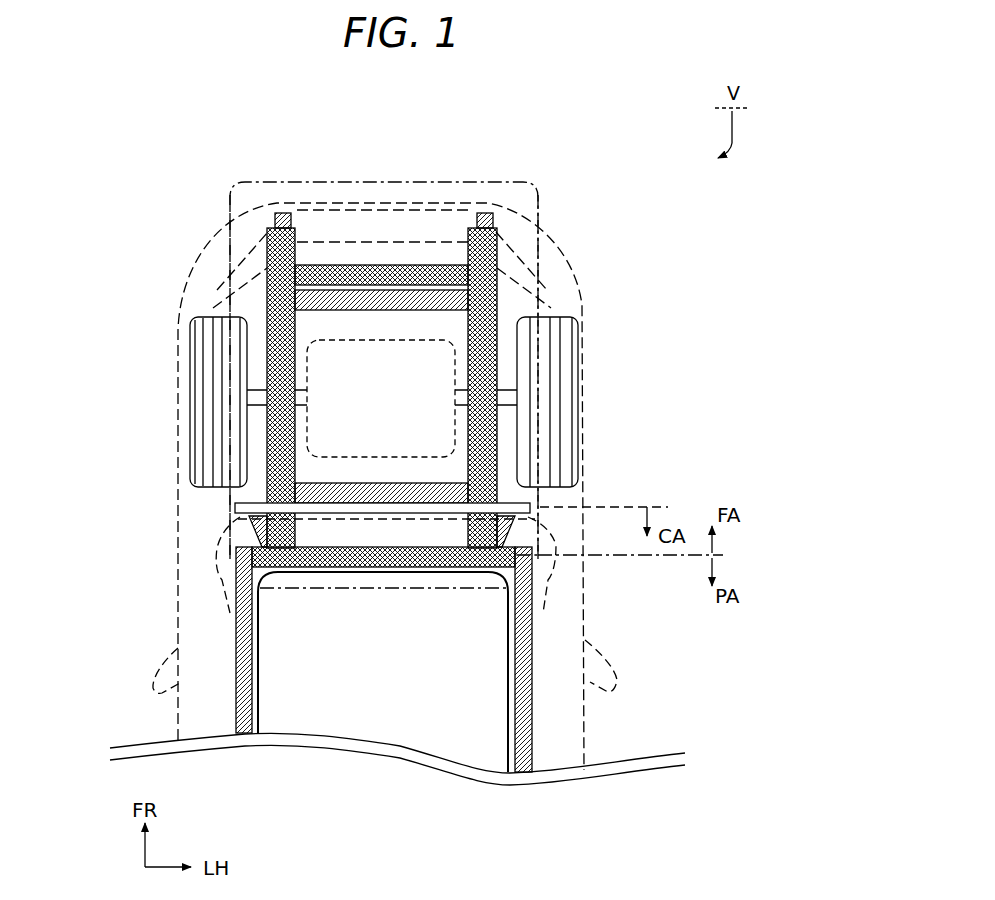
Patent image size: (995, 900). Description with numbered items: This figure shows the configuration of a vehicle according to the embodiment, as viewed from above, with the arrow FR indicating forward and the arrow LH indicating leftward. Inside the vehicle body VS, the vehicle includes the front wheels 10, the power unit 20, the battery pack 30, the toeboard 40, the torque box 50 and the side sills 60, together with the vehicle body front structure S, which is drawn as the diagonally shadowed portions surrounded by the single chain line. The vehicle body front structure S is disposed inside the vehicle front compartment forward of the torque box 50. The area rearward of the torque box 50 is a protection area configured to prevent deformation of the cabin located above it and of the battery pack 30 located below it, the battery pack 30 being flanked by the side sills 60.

The vehicle body front structure S is at (444, 180).
The vehicle body VS is at (195, 275).
The front wheels 10 is at (205, 368).
The power unit 20 is at (327, 445).
The battery pack 30 is at (288, 639).
The toeboard 40 is at (262, 511).
The torque box 50 is at (262, 578).
The side sills 60 is at (245, 691).